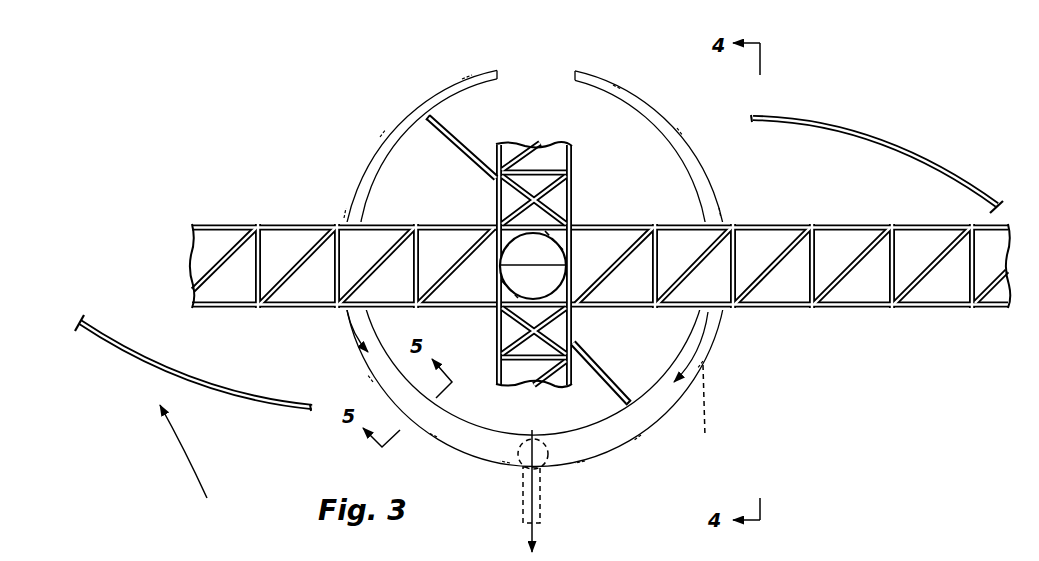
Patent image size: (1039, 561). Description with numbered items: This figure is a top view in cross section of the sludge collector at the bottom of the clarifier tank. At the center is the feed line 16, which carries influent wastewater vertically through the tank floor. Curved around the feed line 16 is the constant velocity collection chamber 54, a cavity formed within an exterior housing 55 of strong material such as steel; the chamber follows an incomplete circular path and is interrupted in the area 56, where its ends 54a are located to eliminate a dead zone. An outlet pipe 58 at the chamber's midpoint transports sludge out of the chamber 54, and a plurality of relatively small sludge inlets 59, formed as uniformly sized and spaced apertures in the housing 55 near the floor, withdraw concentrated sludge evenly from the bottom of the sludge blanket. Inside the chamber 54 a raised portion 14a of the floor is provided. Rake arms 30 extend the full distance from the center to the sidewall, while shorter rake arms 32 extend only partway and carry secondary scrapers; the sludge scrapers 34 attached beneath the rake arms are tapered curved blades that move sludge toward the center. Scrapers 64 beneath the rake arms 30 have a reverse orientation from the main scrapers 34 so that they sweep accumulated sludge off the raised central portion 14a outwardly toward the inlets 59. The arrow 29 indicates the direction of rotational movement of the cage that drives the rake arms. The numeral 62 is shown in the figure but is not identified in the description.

The raised floor portion 14a is at (444, 198).
The feed line 16 is at (553, 280).
The arrow showing rotational movement of the cage 29 is at (196, 451).
The rake arm 30 is at (578, 184).
The rake arm 32 is at (226, 223).
The sludge scraper 34 is at (892, 148).
The constant velocity collection chamber 54 is at (720, 340).
The chamber ends 54a is at (571, 68).
The exterior housing 55 is at (726, 318).
The area 56 is at (545, 83).
The outlet pipe 58 is at (548, 468).
The sludge inlet 59 is at (640, 440).
The support 62 is at (1029, 554).
The scraper 64 is at (452, 128).